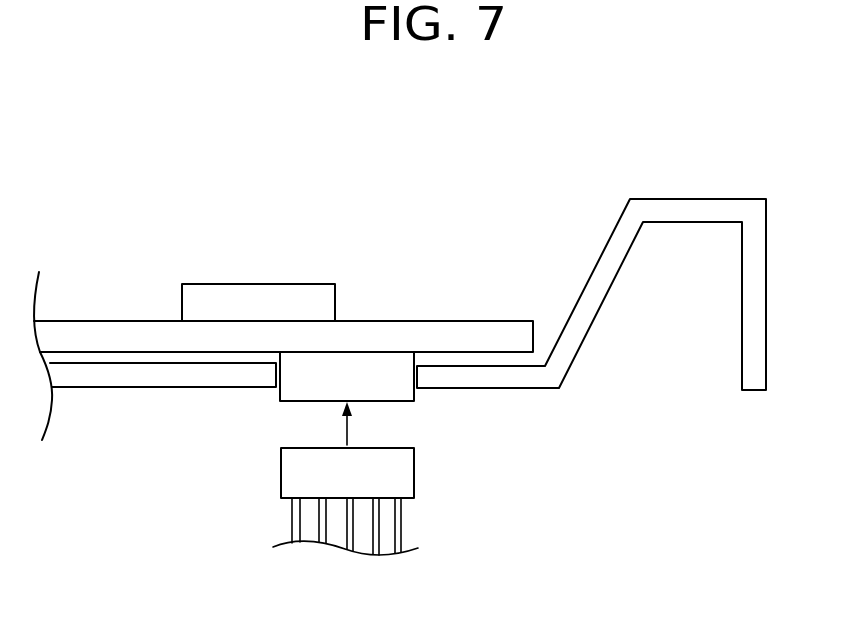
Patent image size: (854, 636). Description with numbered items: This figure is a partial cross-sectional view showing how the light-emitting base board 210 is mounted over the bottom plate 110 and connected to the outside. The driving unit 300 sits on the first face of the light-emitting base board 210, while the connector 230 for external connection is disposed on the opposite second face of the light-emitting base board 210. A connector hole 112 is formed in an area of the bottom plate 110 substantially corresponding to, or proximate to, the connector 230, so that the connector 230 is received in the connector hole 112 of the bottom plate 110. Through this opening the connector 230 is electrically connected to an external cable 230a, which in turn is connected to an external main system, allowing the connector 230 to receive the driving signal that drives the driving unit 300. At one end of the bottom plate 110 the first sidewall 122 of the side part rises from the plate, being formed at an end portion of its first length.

The bottom plate 110 is at (126, 377).
The connector hole 112 is at (277, 377).
The first sidewall 122 is at (590, 298).
The light-emitting base board 210 is at (490, 337).
The connector 230 is at (381, 367).
The external cable 230a is at (405, 473).
The driving unit 300 is at (268, 266).